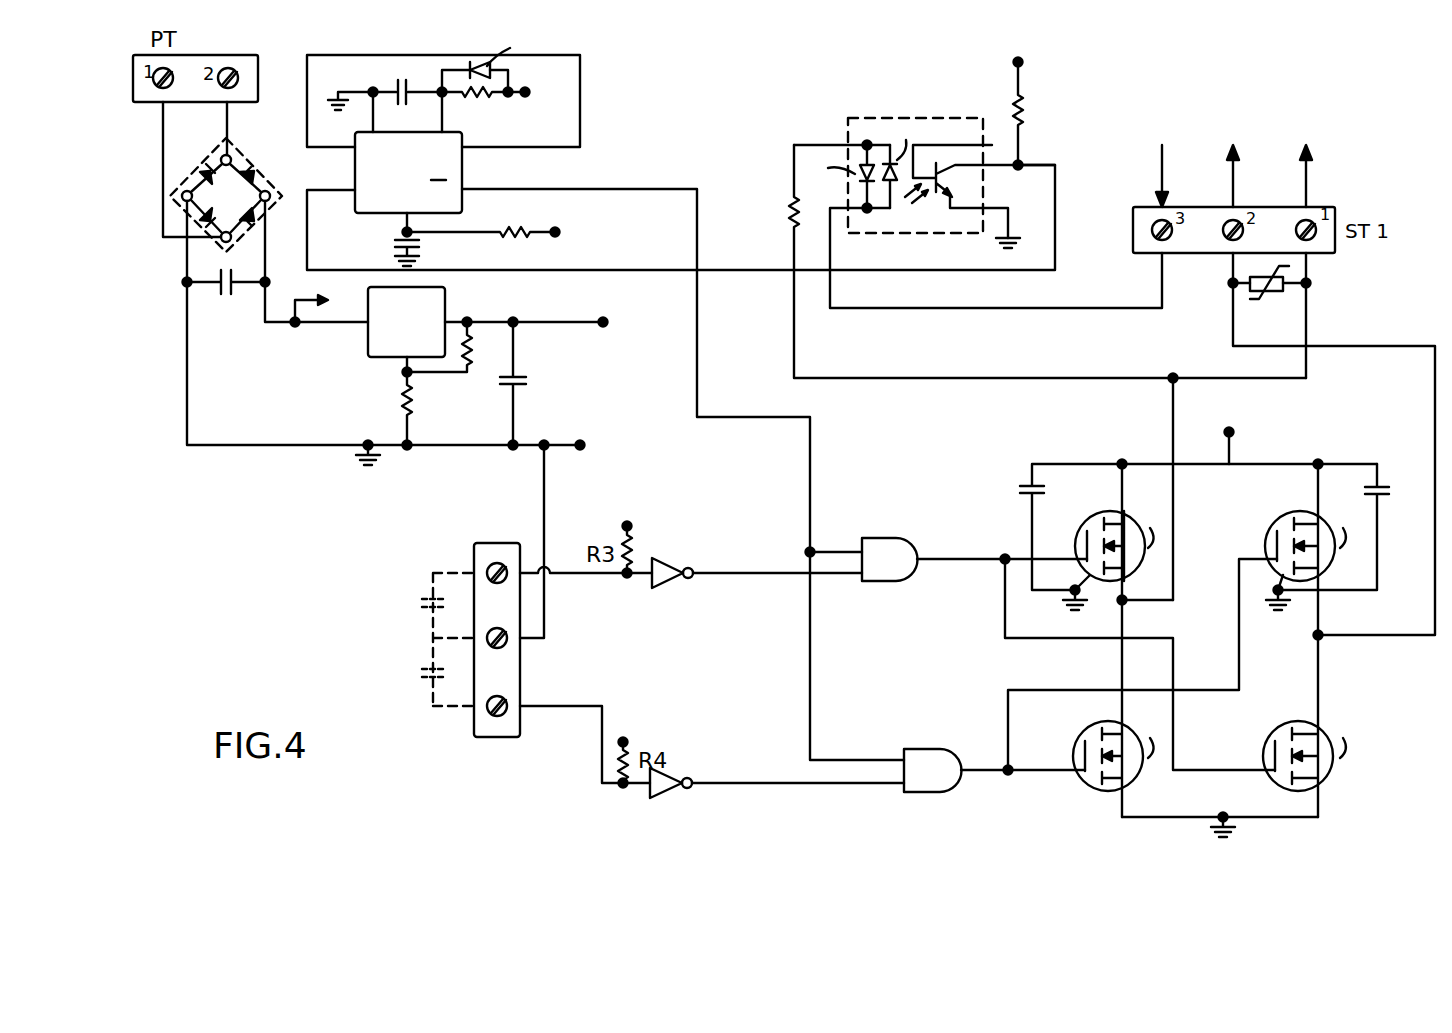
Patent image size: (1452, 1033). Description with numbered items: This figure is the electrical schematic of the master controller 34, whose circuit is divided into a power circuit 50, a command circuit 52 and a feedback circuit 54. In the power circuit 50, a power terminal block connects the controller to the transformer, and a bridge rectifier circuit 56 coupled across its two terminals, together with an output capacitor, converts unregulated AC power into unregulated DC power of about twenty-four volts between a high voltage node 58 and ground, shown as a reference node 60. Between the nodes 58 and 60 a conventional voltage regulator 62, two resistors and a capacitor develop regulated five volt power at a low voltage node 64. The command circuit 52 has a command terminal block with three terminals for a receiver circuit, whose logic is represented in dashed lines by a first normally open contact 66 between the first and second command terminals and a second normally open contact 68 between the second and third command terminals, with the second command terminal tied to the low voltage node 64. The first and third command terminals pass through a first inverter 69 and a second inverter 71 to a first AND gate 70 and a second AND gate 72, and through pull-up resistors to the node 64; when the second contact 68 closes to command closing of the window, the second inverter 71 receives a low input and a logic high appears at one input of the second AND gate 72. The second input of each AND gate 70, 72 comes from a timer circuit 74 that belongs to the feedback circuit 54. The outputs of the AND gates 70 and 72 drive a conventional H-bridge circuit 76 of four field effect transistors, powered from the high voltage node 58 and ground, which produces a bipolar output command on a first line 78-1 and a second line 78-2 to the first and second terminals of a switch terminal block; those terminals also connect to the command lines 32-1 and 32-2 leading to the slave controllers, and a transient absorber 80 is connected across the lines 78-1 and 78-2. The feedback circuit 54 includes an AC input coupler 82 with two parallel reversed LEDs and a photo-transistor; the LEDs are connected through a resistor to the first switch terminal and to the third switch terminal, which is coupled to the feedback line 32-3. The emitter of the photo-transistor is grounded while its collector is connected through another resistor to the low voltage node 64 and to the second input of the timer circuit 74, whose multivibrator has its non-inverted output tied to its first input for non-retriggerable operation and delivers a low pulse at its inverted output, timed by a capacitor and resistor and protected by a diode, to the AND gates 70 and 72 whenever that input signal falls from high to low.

The master controller 34 is at (345, 568).
The power circuit 50 is at (295, 464).
The command circuit 52 is at (968, 466).
The feedback circuit 54 is at (788, 98).
The bridge rectifier circuit 56 is at (240, 153).
The high voltage node 58 is at (295, 326).
The reference node 60 is at (372, 448).
The voltage regulator 62 is at (445, 300).
The low voltage node 64 is at (525, 92).
The first normally open contact 66 is at (412, 604).
The second normally open contact 68 is at (411, 674).
The first inverter 69 is at (672, 558).
The first AND gate 70 is at (880, 538).
The second inverter 71 is at (672, 770).
The second AND gate 72 is at (925, 752).
The timer circuit 74 is at (493, 169).
The H-bridge circuit 76 is at (1095, 457).
The first line 78-1 is at (1173, 402).
The second line 78-2 is at (1435, 402).
The transient absorber 80 is at (1272, 300).
The AC input coupler 82 is at (918, 127).
The command line 32-1 is at (1308, 163).
The command line 32-2 is at (1228, 172).
The feedback line 32-3 is at (1158, 160).